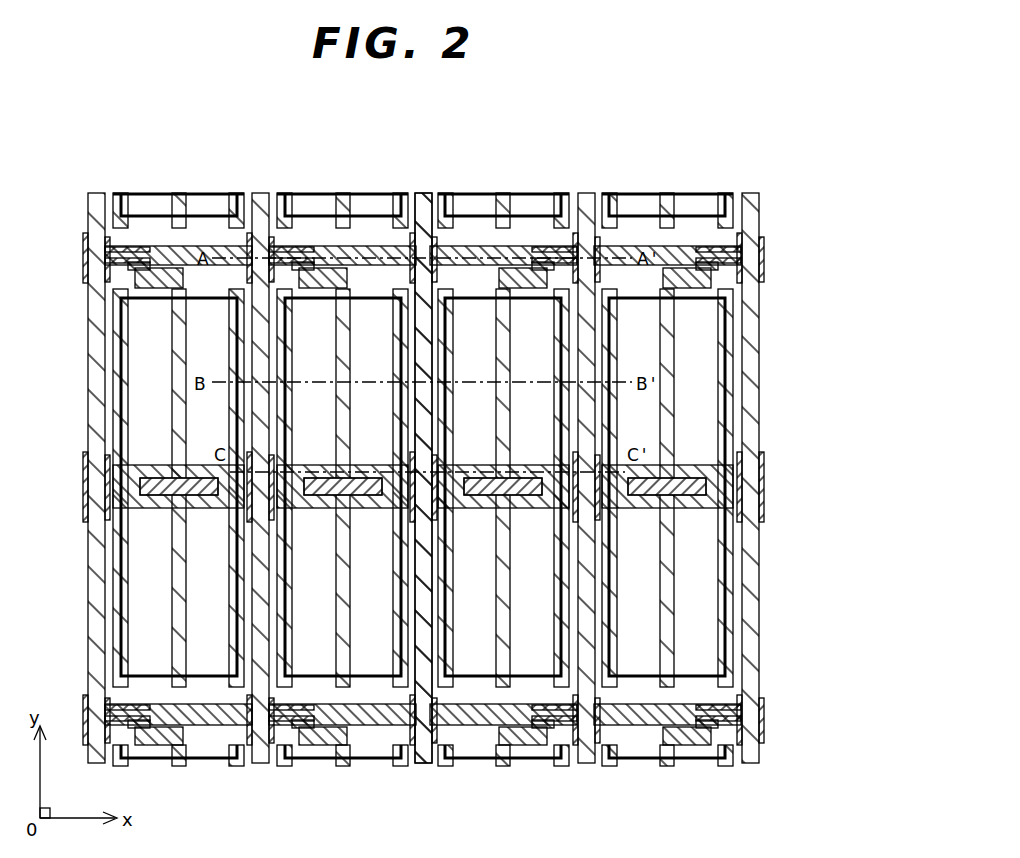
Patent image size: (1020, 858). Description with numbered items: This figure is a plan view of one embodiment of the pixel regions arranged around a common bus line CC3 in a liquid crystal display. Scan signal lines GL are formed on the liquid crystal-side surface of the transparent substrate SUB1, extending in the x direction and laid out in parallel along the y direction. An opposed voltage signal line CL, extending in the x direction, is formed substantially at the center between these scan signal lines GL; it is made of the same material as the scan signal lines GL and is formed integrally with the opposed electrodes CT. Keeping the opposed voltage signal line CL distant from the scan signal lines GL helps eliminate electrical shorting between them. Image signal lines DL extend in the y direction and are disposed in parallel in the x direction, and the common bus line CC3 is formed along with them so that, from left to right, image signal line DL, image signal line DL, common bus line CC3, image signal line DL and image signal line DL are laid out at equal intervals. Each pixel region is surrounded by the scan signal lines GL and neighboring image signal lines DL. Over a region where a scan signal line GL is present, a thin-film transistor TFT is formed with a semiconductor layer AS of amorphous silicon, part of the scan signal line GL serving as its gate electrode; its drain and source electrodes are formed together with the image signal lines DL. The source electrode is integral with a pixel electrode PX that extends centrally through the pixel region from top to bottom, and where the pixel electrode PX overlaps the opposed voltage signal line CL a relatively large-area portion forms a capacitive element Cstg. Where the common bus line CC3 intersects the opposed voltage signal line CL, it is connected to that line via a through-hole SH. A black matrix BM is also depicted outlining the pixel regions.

The image signal line DL is at (249, 193).
The thin-film transistor TFT is at (280, 246).
The semiconductor layer AS is at (321, 247).
The scan signal line GL is at (368, 246).
The common bus line CC3 is at (421, 192).
The opposed electrode CT is at (293, 358).
The pixel electrode PX is at (334, 444).
The through-hole SH is at (463, 477).
The opposed voltage signal line CL is at (316, 503).
The capacitive element Cstg is at (356, 500).
The black matrix BM is at (125, 612).
The transparent substrate SUB1 is at (762, 664).